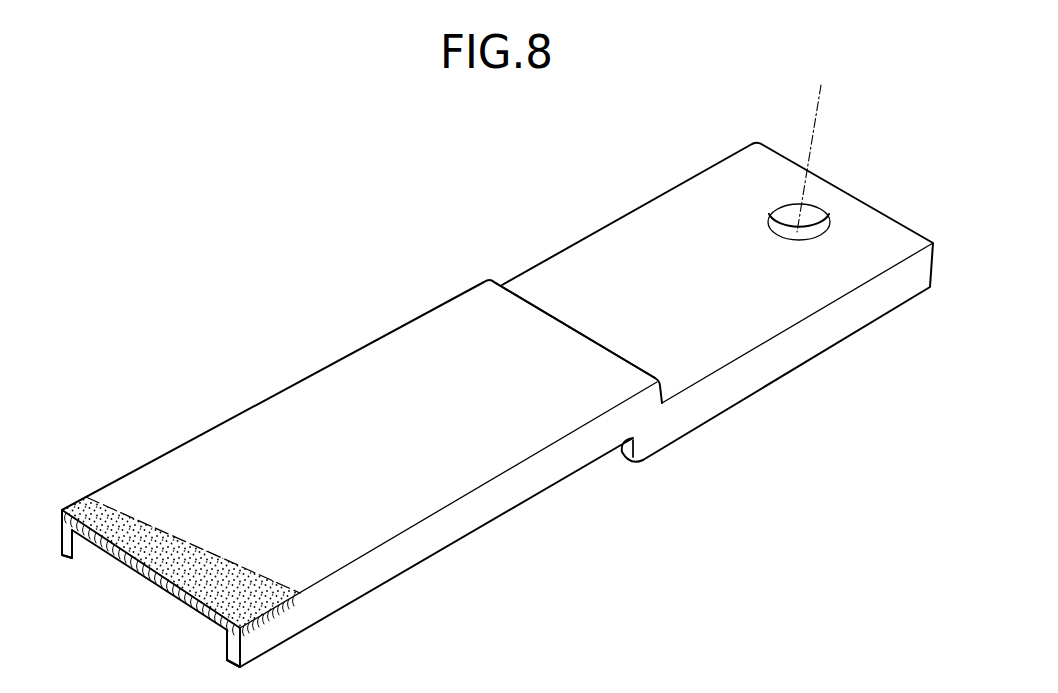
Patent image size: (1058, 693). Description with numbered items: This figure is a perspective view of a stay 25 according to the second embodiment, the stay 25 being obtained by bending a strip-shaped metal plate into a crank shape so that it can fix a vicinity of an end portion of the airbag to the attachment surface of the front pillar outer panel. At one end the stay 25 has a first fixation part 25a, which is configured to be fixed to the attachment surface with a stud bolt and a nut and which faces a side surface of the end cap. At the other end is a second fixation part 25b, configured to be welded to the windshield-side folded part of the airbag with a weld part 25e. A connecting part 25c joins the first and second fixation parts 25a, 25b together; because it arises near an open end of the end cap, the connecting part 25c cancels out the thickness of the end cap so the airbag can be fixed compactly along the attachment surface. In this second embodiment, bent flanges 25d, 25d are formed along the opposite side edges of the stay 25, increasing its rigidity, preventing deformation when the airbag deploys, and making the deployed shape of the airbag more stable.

The stay 25 is at (598, 477).
The first fixation part 25a is at (703, 200).
The second fixation part 25b is at (340, 397).
The connecting part 25c is at (548, 310).
The bent flange 25d is at (82, 555).
The weld part 25e is at (203, 583).